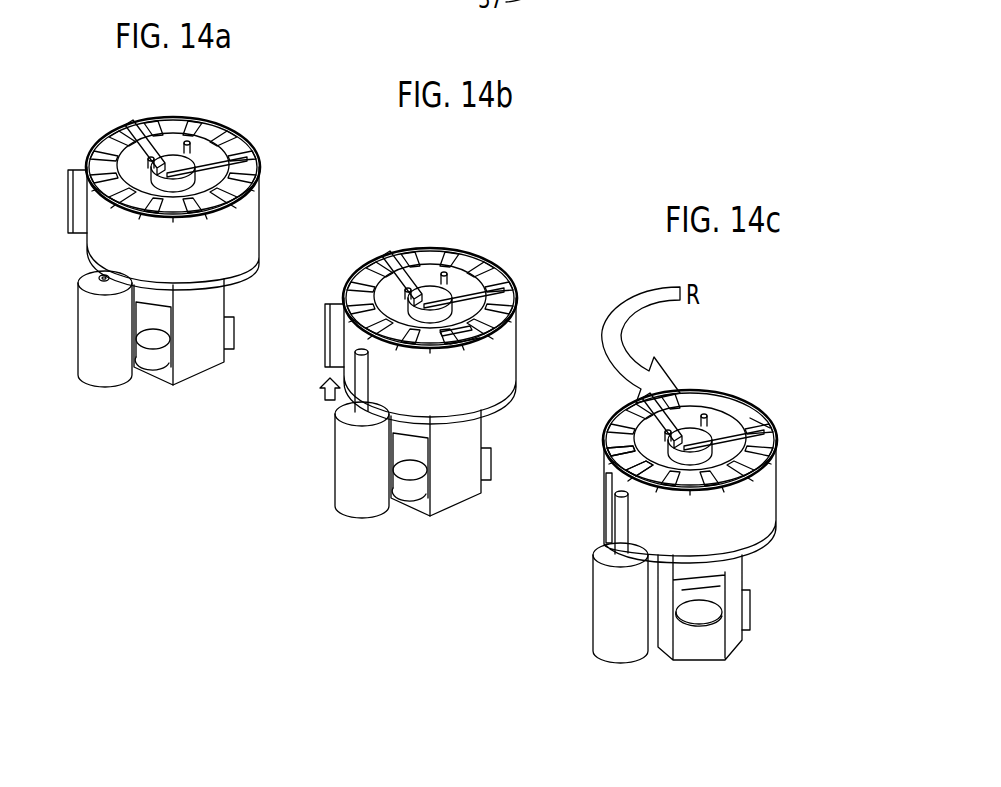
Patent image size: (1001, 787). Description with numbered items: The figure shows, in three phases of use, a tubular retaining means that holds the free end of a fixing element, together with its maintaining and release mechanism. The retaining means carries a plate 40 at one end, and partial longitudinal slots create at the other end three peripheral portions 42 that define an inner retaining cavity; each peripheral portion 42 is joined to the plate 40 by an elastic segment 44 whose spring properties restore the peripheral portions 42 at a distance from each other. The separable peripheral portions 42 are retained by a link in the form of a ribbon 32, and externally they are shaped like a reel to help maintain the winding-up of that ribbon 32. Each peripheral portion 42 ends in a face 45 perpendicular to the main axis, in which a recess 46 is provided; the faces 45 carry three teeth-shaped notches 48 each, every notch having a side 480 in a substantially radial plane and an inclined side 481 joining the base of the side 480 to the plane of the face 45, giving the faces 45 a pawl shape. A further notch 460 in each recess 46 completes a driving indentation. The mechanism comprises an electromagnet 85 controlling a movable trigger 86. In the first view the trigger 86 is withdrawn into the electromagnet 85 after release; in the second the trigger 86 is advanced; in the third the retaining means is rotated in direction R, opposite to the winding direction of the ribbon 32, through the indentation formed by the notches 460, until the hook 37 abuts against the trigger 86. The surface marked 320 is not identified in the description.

In FIG. 14a, the ribbon 32 is at (225, 206).
In FIG. 14b, the ribbon 32 is at (430, 361).
In FIG. 14a, the hook 37 is at (63, 170).
In FIG. 14a, the plate 40 is at (170, 385).
In FIG. 14b, the plate 40 is at (441, 463).
In FIG. 14c, the plate 40 is at (663, 635).
In FIG. 14a, the peripheral portions 42 is at (217, 158).
In FIG. 14b, the peripheral portions 42 is at (408, 275).
In FIG. 14c, the peripheral portions 42 is at (691, 390).
In FIG. 14a, the elastic segment 44 is at (210, 371).
In FIG. 14a, the face 45 is at (237, 114).
In FIG. 14b, the face 45 is at (487, 214).
In FIG. 14c, the face 45 is at (589, 463).
In FIG. 14a, the recess 46 is at (125, 126).
In FIG. 14b, the recess 46 is at (386, 241).
In FIG. 14a, the notches 48 is at (225, 213).
In FIG. 14b, the notches 48 is at (442, 232).
In FIG. 14c, the notches 48 is at (611, 457).
In FIG. 14a, the electromagnet 85 is at (93, 368).
In FIG. 14b, the electromagnet 85 is at (328, 473).
In FIG. 14c, the electromagnet 85 is at (576, 603).
In FIG. 14a, the trigger 86 is at (72, 306).
In FIG. 14b, the trigger 86 is at (318, 392).
In FIG. 14c, the trigger 86 is at (566, 543).
In FIG. 14c, the housing body 320 is at (733, 501).
In FIG. 14b, the notch 460 is at (509, 245).
In FIG. 14c, the notch 460 is at (725, 527).
In FIG. 14b, the side 480 is at (526, 289).
In FIG. 14c, the side 480 is at (753, 382).
In FIG. 14b, the side 481 is at (457, 340).
In FIG. 14c, the side 481 is at (796, 389).